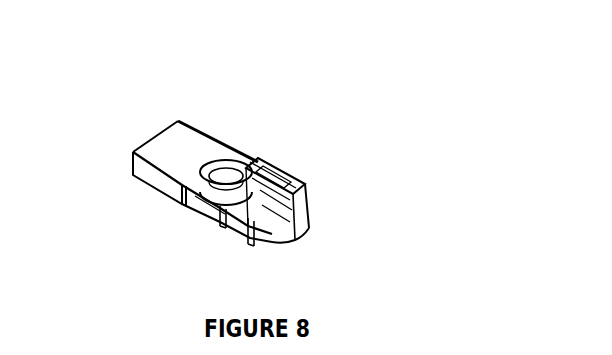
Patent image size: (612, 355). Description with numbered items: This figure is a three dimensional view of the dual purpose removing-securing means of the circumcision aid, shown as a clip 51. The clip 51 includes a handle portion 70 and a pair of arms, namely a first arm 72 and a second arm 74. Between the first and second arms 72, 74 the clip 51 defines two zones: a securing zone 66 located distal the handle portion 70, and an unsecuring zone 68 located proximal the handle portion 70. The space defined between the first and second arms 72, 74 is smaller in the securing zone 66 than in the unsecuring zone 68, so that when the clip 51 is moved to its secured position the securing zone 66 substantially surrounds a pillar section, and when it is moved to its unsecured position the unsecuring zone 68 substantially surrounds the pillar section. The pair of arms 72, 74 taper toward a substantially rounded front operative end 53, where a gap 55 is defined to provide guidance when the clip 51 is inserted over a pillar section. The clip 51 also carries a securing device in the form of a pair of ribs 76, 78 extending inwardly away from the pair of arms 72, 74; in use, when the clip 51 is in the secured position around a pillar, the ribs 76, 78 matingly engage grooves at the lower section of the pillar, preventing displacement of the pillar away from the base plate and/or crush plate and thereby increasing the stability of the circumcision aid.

The clip 51 is at (283, 113).
The rounded front operative end 53 is at (305, 214).
The gap 55 is at (306, 240).
The securing zone 66 is at (289, 178).
The unsecuring zone 68 is at (222, 175).
The handle portion 70 is at (135, 151).
The first arm 72 is at (233, 226).
The second arm 74 is at (301, 187).
The rib 76 is at (257, 246).
The rib 78 is at (281, 178).